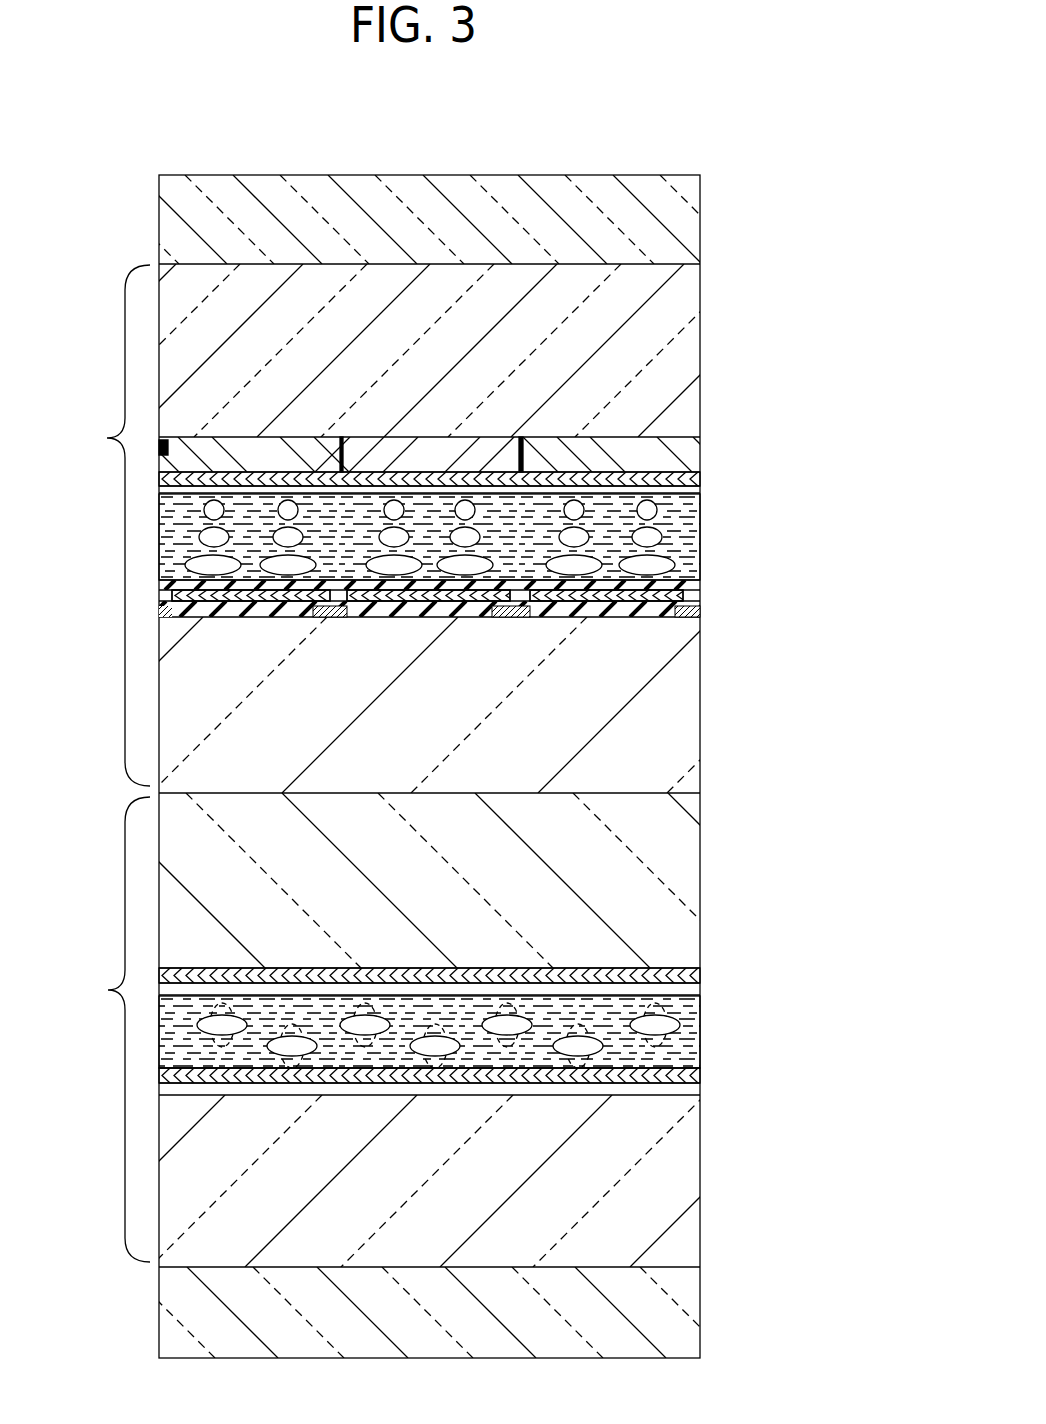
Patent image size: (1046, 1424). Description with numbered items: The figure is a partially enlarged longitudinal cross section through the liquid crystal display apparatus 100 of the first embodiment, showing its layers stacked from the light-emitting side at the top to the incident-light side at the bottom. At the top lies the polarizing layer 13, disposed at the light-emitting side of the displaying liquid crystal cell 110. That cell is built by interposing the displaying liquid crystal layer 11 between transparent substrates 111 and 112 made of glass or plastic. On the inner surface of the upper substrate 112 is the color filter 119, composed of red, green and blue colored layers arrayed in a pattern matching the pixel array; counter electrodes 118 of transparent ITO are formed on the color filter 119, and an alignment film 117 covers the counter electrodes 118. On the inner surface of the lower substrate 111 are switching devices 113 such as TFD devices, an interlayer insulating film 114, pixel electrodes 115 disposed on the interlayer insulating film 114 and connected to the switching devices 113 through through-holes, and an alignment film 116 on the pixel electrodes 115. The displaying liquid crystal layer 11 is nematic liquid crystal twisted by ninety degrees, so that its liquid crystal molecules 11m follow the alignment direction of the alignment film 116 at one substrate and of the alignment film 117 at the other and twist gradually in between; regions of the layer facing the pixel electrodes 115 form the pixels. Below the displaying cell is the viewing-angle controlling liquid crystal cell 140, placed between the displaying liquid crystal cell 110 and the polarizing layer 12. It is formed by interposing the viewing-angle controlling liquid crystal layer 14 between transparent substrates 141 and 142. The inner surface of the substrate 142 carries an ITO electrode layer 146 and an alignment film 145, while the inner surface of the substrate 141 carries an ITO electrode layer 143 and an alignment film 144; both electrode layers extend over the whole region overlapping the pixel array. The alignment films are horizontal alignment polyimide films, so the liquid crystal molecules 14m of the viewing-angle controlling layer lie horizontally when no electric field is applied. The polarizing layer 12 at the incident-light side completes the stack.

The liquid crystal display device 100 is at (558, 91).
The polarizing layer 13 is at (690, 220).
The transparent substrate 112 is at (690, 365).
The counter electrodes 118 is at (692, 470).
The color filter 119 is at (162, 452).
The alignment film 117 is at (692, 492).
The displaying liquid crystal layer 11 is at (692, 540).
The liquid crystal molecules 11m is at (200, 537).
The pixel electrodes 115 is at (692, 576).
The alignment film 116 is at (183, 588).
The switching devices 113 is at (680, 613).
The interlayer insulating film 114 is at (635, 613).
The transparent substrate 111 is at (688, 725).
The displaying liquid crystal cell 110 is at (105, 525).
The transparent substrate 142 is at (688, 868).
The electrode layer 146 is at (692, 968).
The alignment film 145 is at (692, 995).
The viewing-angle controlling liquid crystal layer 14 is at (692, 1030).
The liquid crystal molecules 14m is at (185, 1040).
The alignment film 144 is at (692, 1068).
The electrode layer 143 is at (692, 1095).
The transparent substrate 141 is at (688, 1178).
The viewing-angle controlling liquid crystal cell 140 is at (104, 1029).
The polarizing layer 12 is at (688, 1300).